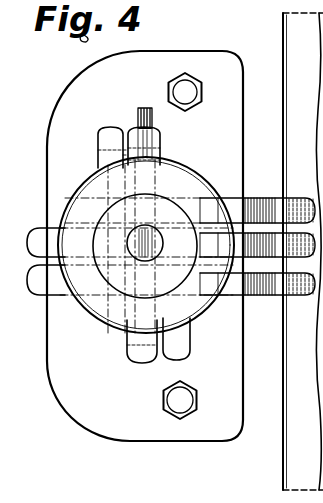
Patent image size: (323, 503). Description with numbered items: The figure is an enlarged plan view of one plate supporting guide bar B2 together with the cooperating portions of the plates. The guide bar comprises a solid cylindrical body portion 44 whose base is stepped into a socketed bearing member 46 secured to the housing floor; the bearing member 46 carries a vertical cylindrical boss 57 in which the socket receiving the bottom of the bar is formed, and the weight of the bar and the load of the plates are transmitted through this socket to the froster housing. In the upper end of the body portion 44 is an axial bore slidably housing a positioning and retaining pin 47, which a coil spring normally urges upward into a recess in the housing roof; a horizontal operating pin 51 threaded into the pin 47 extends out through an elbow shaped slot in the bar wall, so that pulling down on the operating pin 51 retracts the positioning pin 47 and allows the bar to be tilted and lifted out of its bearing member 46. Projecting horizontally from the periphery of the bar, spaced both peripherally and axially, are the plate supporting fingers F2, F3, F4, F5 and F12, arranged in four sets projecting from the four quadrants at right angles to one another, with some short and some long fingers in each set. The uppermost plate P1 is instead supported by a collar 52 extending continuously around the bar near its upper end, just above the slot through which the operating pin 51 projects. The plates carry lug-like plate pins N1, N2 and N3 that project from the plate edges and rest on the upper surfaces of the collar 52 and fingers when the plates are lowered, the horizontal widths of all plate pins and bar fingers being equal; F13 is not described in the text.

The socketed bearing member 46 is at (83, 69).
The operating pin 51 is at (145, 111).
The finger F4 is at (112, 129).
The finger F2 is at (99, 150).
The finger F12 is at (160, 136).
The finger F5 is at (166, 156).
The flange ring F13 is at (214, 168).
The collar 52 is at (237, 185).
The plate pin N2 is at (269, 210).
The vertical cylindrical boss 57 is at (78, 187).
The finger F3 is at (67, 197).
The positioning and retaining pin 47 is at (128, 243).
The body portion 44 is at (107, 280).
The guide bar B2 is at (101, 336).
The plate pin N1 is at (272, 290).
The plate pin N3 is at (277, 300).
The uppermost plate P1 is at (283, 472).